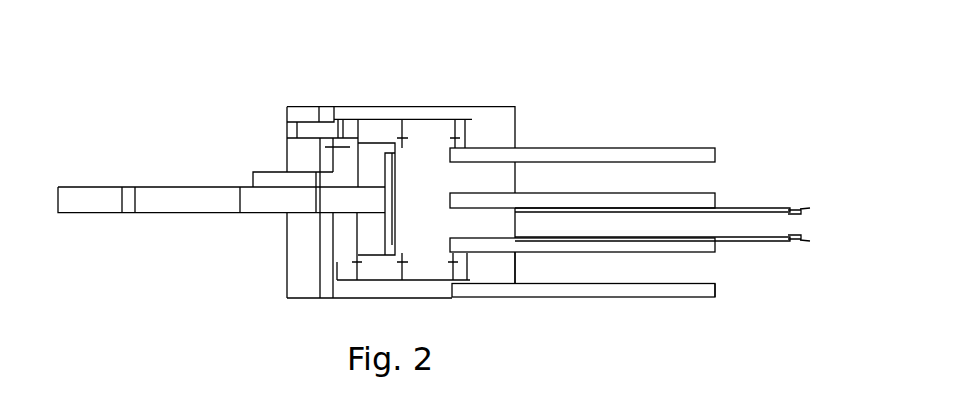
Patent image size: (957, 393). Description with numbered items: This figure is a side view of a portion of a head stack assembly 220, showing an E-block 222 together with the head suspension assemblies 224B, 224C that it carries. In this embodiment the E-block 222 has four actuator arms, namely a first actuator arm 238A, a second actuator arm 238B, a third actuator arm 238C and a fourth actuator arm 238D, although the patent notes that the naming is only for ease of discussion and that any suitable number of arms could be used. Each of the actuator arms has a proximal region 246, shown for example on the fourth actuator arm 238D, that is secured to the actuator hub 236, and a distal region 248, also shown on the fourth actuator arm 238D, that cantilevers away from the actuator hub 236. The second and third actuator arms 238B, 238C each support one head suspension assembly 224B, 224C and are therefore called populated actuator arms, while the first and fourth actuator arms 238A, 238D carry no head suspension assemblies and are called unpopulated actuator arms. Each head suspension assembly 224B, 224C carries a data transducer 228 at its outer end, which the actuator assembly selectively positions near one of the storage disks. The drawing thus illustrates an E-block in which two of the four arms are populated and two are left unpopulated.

The head stack assembly 220 is at (385, 68).
The E-block 222 is at (517, 132).
The actuator hub 236 is at (480, 118).
The first actuator arm 238A is at (630, 148).
The second actuator arm 238B is at (638, 193).
The third actuator arm 238C is at (630, 252).
The fourth actuator arm 238D is at (622, 298).
The head suspension assembly 224B is at (747, 207).
The head suspension assembly 224C is at (747, 241).
The data transducer 228 is at (795, 213).
The distal region 248 is at (715, 290).
The proximal region 246 is at (518, 288).